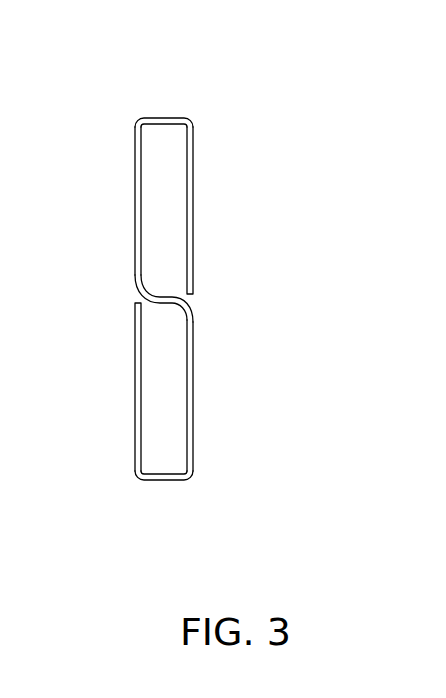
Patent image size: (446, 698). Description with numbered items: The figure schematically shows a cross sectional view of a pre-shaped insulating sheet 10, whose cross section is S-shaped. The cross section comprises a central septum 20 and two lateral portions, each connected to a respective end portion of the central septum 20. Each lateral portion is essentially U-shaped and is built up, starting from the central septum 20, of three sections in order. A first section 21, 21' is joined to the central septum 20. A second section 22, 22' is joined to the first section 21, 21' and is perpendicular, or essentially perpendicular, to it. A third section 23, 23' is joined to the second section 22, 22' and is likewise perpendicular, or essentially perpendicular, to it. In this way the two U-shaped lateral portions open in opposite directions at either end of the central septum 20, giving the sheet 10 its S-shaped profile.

The pre-shaped insulating sheet 10 is at (125, 108).
The central septum 20 is at (163, 297).
The first section 21 is at (92, 201).
The first section 21' is at (237, 395).
The second section 22 is at (185, 66).
The second section 22' is at (178, 519).
The third section 23 is at (232, 208).
The third section 23' is at (88, 387).